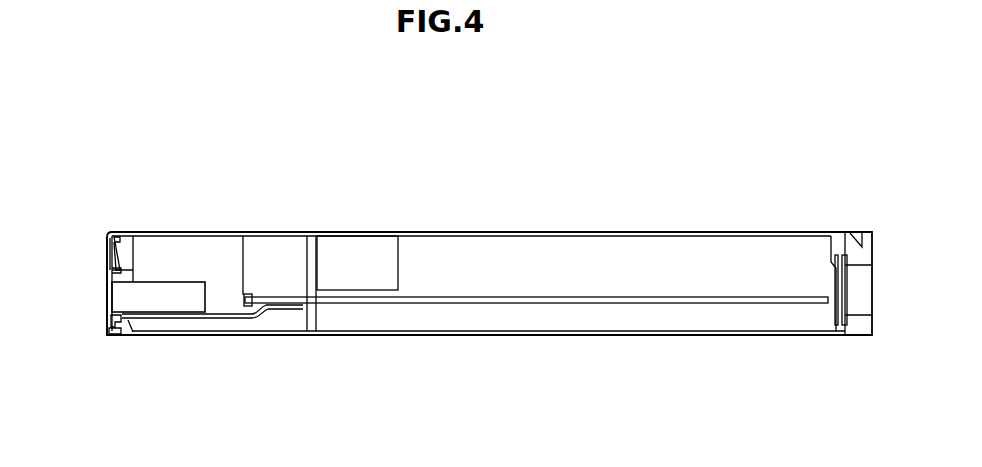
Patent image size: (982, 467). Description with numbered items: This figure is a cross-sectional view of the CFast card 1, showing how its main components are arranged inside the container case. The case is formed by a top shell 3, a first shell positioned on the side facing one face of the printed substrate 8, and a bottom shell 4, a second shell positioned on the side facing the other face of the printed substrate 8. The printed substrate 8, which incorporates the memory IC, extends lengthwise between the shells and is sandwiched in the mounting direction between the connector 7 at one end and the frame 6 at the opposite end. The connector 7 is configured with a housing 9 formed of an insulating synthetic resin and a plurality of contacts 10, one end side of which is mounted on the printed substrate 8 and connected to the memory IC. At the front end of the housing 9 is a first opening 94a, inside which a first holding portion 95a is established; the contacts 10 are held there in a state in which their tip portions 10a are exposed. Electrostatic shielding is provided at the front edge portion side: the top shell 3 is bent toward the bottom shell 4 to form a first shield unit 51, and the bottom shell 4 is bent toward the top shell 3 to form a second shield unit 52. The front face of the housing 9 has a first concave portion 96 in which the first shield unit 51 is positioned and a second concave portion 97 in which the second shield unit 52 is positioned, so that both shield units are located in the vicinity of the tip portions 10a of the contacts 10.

The CFast card 1 is at (760, 147).
The top shell 3 is at (350, 232).
The bottom shell 4 is at (617, 335).
The frame 6 is at (860, 305).
The connector 7 is at (357, 400).
The printed substrate 8 is at (478, 302).
The housing 9 is at (295, 318).
The contacts 10 is at (264, 334).
The tip portions 10a is at (130, 320).
The first shield unit 51 is at (108, 255).
The second shield unit 52 is at (110, 334).
The first opening 94a is at (94, 285).
The first holding portion 95a is at (175, 295).
The first concave portion 96 is at (109, 240).
The second concave portion 97 is at (108, 326).